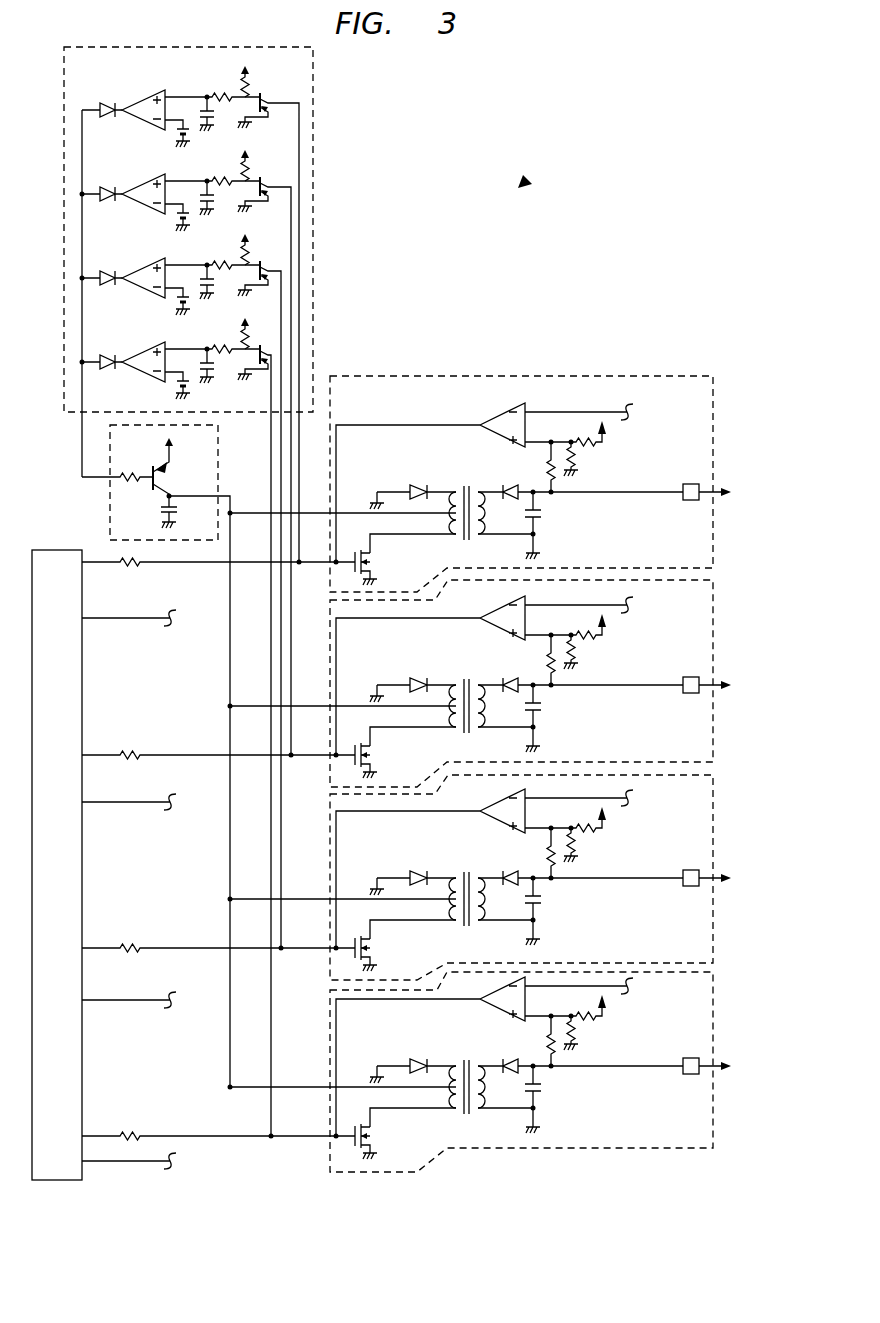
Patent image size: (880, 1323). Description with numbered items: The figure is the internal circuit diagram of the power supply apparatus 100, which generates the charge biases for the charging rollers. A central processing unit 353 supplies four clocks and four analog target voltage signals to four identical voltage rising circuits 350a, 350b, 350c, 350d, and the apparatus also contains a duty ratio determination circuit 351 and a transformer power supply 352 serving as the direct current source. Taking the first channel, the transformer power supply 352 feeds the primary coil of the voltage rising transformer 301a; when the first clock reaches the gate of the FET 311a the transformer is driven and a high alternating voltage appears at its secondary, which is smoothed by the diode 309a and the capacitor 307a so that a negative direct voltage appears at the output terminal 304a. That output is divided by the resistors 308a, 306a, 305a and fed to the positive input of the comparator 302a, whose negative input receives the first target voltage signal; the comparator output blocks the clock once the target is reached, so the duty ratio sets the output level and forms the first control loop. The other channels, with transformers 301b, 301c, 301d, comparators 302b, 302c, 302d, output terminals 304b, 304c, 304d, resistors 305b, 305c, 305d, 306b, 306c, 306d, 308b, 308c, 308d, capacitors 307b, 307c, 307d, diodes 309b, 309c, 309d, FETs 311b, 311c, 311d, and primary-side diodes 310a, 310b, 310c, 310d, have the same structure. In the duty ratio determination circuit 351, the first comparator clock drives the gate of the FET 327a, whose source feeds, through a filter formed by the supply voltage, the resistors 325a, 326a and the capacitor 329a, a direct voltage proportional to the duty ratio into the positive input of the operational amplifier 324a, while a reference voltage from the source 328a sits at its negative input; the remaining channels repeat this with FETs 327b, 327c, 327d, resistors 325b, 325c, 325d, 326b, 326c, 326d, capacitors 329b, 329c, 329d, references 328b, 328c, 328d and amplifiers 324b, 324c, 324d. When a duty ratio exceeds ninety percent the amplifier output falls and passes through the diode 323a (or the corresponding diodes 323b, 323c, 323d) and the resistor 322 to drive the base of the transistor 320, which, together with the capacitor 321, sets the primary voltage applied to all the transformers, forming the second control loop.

The power supply apparatus 100 is at (525, 180).
The duty ratio determination circuit 351 is at (313, 92).
The transformer power supply 352 is at (110, 518).
The CPU 353 is at (57, 548).
The transistor 320 is at (170, 470).
The capacitor 321 is at (162, 511).
The resistor 322 is at (130, 472).
The diode 323a is at (104, 104).
The diode 323b is at (96, 175).
The diode 323c is at (96, 259).
The diode 323d is at (96, 343).
The operational amplifier 324a is at (147, 98).
The operational amplifier 324b is at (153, 178).
The operational amplifier 324c is at (153, 262).
The operational amplifier 324d is at (153, 346).
The resistor 325a is at (217, 94).
The resistor 325b is at (212, 164).
The resistor 325c is at (212, 248).
The resistor 325d is at (212, 332).
The resistor 326a is at (250, 88).
The resistor 326b is at (270, 158).
The resistor 326c is at (269, 242).
The resistor 326d is at (301, 326).
The FET 327a is at (263, 112).
The transistor 327b is at (272, 467).
The transistor 327c is at (304, 606).
The transistor 327d is at (304, 742).
The reference voltage source 328a is at (176, 132).
The reference voltage source 328b is at (147, 217).
The reference voltage source 328c is at (147, 301).
The reference voltage source 328d is at (147, 385).
The capacitor 329a is at (212, 121).
The capacitor 329b is at (227, 198).
The capacitor 329c is at (226, 282).
The capacitor 329d is at (219, 375).
The voltage rising transformer 301a is at (460, 490).
The voltage rising transformer 301b is at (455, 687).
The voltage rising transformer 301c is at (455, 880).
The voltage rising transformer 301d is at (455, 1068).
The comparator 302a is at (504, 414).
The comparator 302b is at (484, 669).
The comparator 302c is at (484, 862).
The comparator 302d is at (484, 1050).
The output terminal 304a is at (684, 502).
The output terminal 304b is at (632, 693).
The output terminal 304c is at (632, 886).
The output terminal 304d is at (632, 1074).
The resistor 305a is at (592, 446).
The resistor 305b is at (591, 631).
The resistor 305c is at (591, 824).
The resistor 305d is at (591, 1012).
The resistor 306a is at (577, 463).
The resistor 306b is at (599, 654).
The resistor 306c is at (599, 847).
The resistor 306d is at (599, 1035).
The capacitor 307a is at (543, 513).
The capacitor 307b is at (541, 718).
The capacitor 307c is at (541, 911).
The capacitor 307d is at (541, 1099).
The resistor 308a is at (549, 460).
The resistor 308b is at (550, 648).
The resistor 308c is at (549, 841).
The resistor 308d is at (550, 1029).
The diode 309a is at (507, 486).
The diode 309b is at (502, 666).
The diode 309c is at (502, 859).
The diode 309d is at (502, 1047).
The diode 310a is at (410, 486).
The diode 310b is at (413, 671).
The diode 310c is at (413, 864).
The diode 310d is at (413, 1052).
The FET 311a is at (375, 557).
The switching element 311b is at (269, 752).
The switching element 311c is at (269, 945).
The switching element 311d is at (269, 1133).
The voltage rising circuit 350a is at (713, 401).
The voltage rising circuit 350b is at (713, 596).
The voltage rising circuit 350c is at (713, 789).
The voltage rising circuit 350d is at (713, 981).